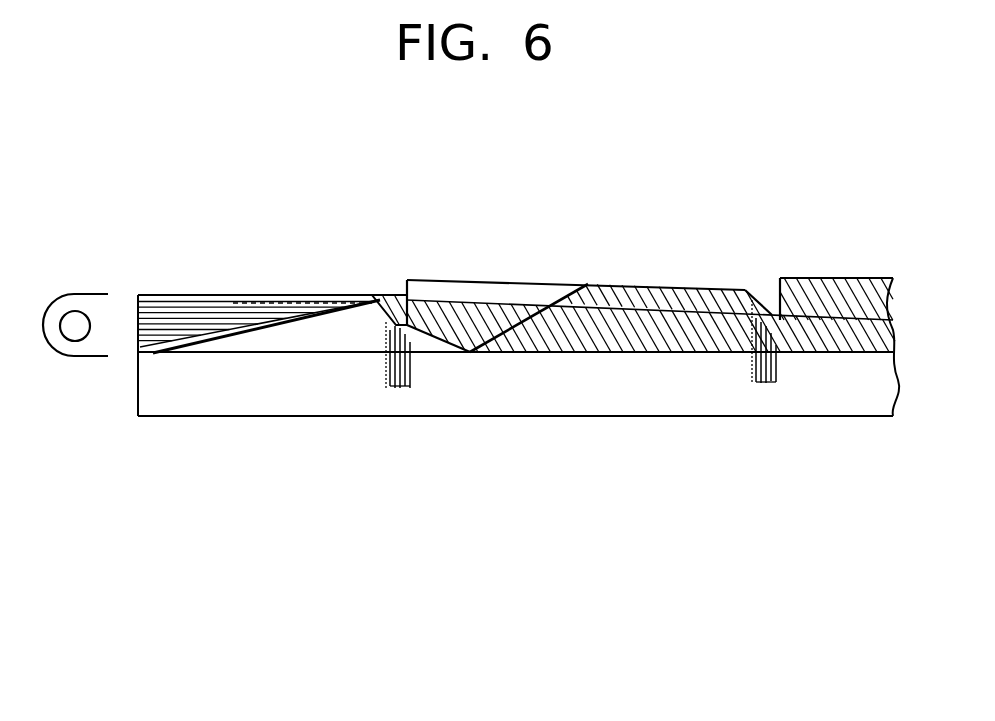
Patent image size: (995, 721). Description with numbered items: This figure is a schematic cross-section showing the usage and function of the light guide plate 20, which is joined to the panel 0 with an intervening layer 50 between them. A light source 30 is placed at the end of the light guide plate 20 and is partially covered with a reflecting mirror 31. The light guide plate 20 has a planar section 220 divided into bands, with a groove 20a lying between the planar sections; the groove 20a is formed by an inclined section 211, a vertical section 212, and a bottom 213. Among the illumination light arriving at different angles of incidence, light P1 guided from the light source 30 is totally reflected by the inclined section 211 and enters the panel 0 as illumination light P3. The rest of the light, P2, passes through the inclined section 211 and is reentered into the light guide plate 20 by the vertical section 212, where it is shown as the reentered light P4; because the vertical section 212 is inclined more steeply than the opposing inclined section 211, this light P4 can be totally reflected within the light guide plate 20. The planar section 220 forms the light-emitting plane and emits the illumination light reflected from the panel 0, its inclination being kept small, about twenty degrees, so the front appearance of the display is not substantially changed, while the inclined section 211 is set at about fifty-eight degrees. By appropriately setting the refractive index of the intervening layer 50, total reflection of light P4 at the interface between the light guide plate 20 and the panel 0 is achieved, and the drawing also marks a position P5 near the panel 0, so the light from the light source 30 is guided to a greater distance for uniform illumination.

The light source 30 is at (75, 325).
The reflecting mirror 31 is at (73, 357).
The panel 0 is at (597, 388).
The intervening layer 50 is at (838, 353).
The illumination light P1 is at (297, 300).
The illumination light P2 is at (257, 334).
The illumination light P3 is at (385, 382).
The reentered illumination light P4 is at (477, 302).
The fifth position P5 is at (750, 362).
The inclined section 211 is at (381, 294).
The vertical section 212 is at (396, 280).
The bottom 213 is at (394, 323).
The planar section 220 is at (553, 285).
The light guide plate 20 is at (856, 298).
The groove 20a is at (760, 278).